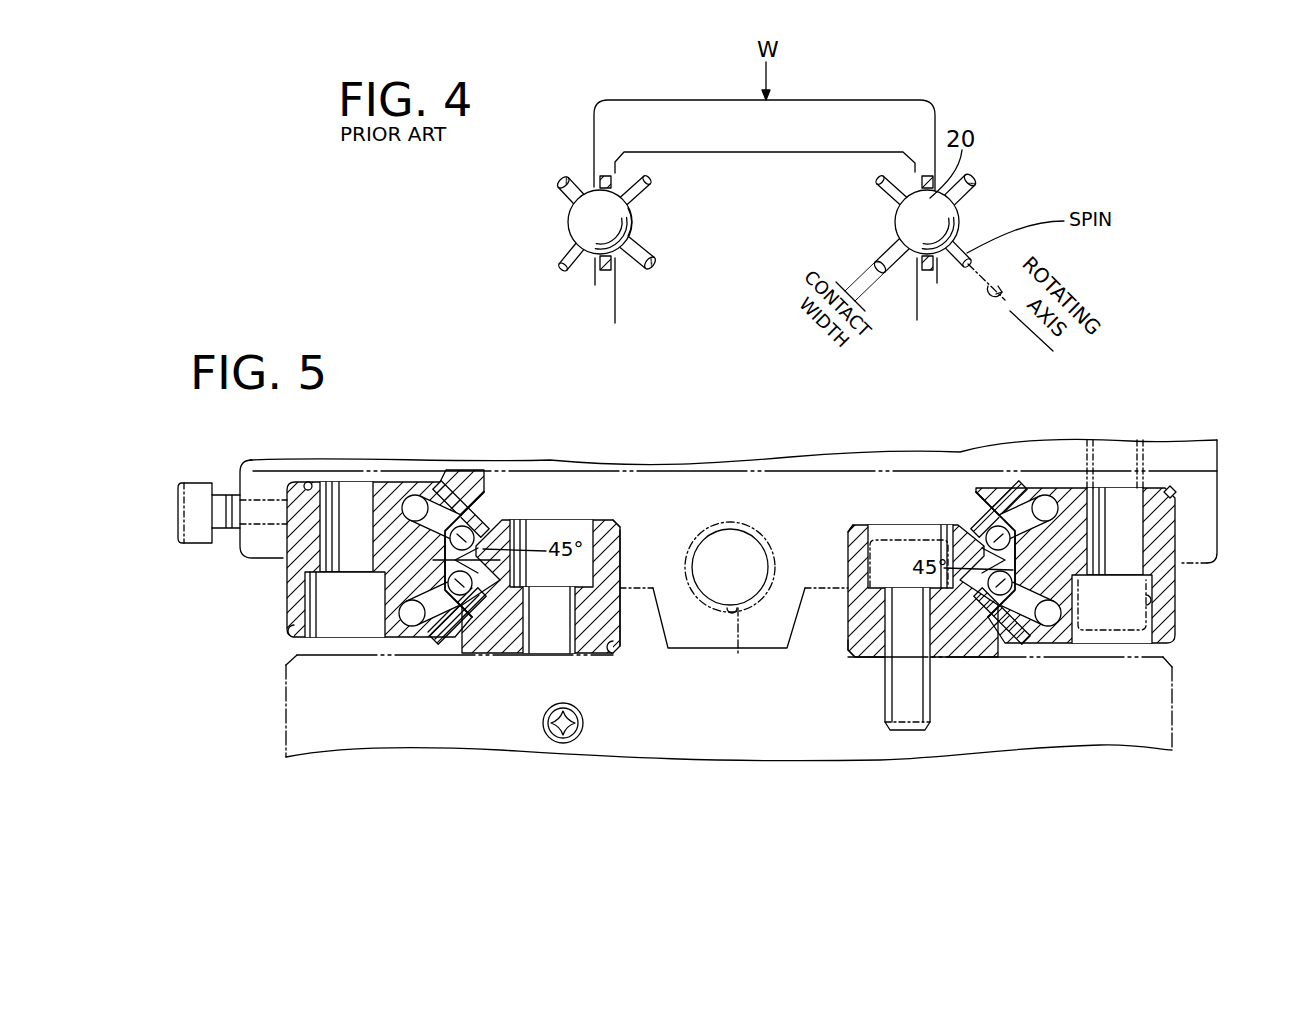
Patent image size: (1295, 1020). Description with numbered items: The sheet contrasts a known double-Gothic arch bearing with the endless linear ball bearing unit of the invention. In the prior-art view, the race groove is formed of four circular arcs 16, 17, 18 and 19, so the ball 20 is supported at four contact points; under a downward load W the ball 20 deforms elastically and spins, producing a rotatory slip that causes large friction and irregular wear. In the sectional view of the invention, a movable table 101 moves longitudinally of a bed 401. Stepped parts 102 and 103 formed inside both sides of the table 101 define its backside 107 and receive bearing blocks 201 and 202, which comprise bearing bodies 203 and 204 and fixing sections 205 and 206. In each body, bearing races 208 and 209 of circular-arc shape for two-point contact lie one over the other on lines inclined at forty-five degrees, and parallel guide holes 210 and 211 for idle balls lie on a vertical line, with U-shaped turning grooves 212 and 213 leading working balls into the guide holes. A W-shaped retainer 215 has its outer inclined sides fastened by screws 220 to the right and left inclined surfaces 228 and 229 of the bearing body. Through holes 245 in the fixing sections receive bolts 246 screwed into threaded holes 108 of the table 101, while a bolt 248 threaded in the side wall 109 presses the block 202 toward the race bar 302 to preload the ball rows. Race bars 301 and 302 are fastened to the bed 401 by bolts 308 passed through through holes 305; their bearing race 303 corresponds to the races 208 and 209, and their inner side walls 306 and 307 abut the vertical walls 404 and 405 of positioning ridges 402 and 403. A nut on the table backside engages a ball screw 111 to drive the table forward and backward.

In FIG. 4, the circular arc 16 is at (643, 210).
In FIG. 4, the circular arc 17 is at (568, 216).
In FIG. 4, the circular arc 18 is at (567, 237).
In FIG. 4, the circular arc 19 is at (617, 264).
In FIG. 4, the ball 20 is at (597, 203).
In FIG. 5, the movable table 101 is at (1217, 518).
In FIG. 5, the stepped part 102 is at (1172, 490).
In FIG. 5, the stepped part 103 is at (307, 482).
In FIG. 5, the backside 107 is at (858, 478).
In FIG. 5, the threaded hole 108 is at (1137, 452).
In FIG. 5, the side wall 109 is at (237, 547).
In FIG. 5, the ball screw 111 is at (730, 606).
In FIG. 5, the bearing block 201 is at (1129, 519).
In FIG. 5, the bearing block 202 is at (314, 540).
In FIG. 5, the bearing body 203 is at (1072, 490).
In FIG. 5, the bearing body 204 is at (383, 482).
In FIG. 5, the fixing section 205 is at (1160, 537).
In FIG. 5, the fixing section 206 is at (297, 556).
In FIG. 5, the bearing race 208 is at (473, 535).
In FIG. 5, the bearing race 209 is at (470, 575).
In FIG. 5, the guide hole 210 is at (410, 500).
In FIG. 5, the guide hole 211 is at (408, 626).
In FIG. 5, the U-shaped turning groove 212 is at (1010, 523).
In FIG. 5, the U-shaped turning groove 213 is at (436, 636).
In FIG. 5, the retainer 215 is at (713, 558).
In FIG. 5, the screw 220 is at (484, 513).
In FIG. 5, the inclined surface 228 is at (442, 482).
In FIG. 5, the inclined surface 229 is at (429, 642).
In FIG. 5, the through hole 245 is at (252, 644).
In FIG. 5, the bolt 246 is at (1143, 605).
In FIG. 5, the bolt 248 is at (197, 497).
In FIG. 5, the race bar 301 is at (855, 528).
In FIG. 5, the race bar 302 is at (616, 521).
In FIG. 5, the bearing race 303 is at (577, 597).
In FIG. 5, the through hole 305 is at (575, 628).
In FIG. 5, the inner side wall 306 is at (882, 604).
In FIG. 5, the inner side wall 307 is at (620, 550).
In FIG. 5, the bolt 308 is at (900, 553).
In FIG. 5, the bed 401 is at (298, 722).
In FIG. 5, the positioning ridge 402 is at (806, 628).
In FIG. 5, the positioning ridge 403 is at (660, 615).
In FIG. 5, the vertical wall 404 is at (821, 650).
In FIG. 5, the vertical wall 405 is at (614, 640).